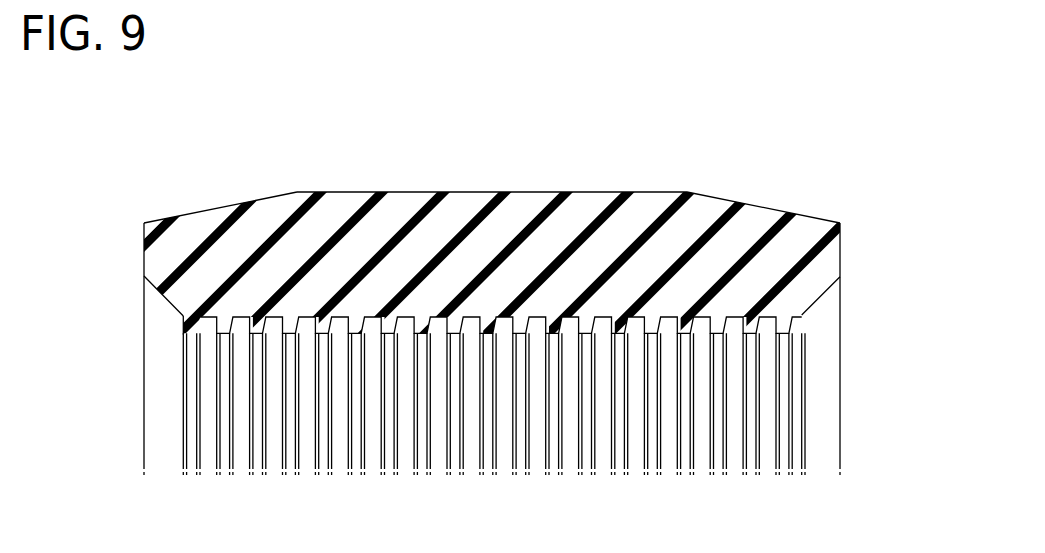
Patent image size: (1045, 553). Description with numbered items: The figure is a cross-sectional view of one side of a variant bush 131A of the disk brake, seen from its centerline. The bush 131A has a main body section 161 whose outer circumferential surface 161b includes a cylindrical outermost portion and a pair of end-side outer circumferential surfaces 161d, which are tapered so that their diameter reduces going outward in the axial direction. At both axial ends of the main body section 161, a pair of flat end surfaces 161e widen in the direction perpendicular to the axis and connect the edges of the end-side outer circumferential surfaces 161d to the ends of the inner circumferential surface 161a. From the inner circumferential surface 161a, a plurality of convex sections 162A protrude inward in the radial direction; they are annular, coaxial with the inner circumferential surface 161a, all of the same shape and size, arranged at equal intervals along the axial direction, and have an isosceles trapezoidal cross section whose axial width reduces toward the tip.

The bush 131A is at (831, 176).
The main body section 161 is at (577, 218).
The inner circumferential surface 161a is at (406, 318).
The outer circumferential surface 161b is at (652, 193).
The end-side outer circumferential surfaces 161d is at (248, 202).
The end surfaces 161e is at (143, 258).
The convex sections 162A is at (358, 460).